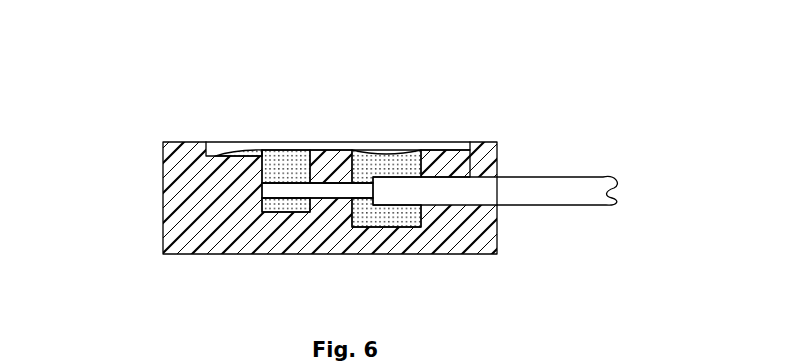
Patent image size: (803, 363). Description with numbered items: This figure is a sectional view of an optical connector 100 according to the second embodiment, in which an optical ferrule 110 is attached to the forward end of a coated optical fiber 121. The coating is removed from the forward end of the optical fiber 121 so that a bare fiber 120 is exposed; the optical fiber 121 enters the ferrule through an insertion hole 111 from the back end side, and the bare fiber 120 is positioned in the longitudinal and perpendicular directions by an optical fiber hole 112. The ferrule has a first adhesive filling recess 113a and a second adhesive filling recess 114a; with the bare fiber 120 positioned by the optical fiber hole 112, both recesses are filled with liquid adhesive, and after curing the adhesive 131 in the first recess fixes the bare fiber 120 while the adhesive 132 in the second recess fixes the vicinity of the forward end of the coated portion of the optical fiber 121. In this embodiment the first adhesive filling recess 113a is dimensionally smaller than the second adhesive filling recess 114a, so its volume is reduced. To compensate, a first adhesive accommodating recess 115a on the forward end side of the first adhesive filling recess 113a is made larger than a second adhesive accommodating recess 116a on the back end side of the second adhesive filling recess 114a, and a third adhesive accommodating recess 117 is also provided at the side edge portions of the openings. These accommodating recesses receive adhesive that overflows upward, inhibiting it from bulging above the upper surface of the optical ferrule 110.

The optical connector 100 is at (575, 121).
The optical ferrule 110 is at (156, 131).
The insertion hole 111 is at (443, 206).
The optical fiber hole 112 is at (322, 182).
The first adhesive filling recess 113a is at (268, 208).
The second adhesive filling recess 114a is at (372, 227).
The first adhesive accommodating recess 115a is at (214, 155).
The second adhesive accommodating recess 116a is at (445, 153).
The third adhesive accommodating recess 117 is at (325, 156).
The bare fiber 120 is at (332, 190).
The optical fiber 121 is at (525, 190).
The adhesive 131 is at (272, 158).
The adhesive 132 is at (370, 158).